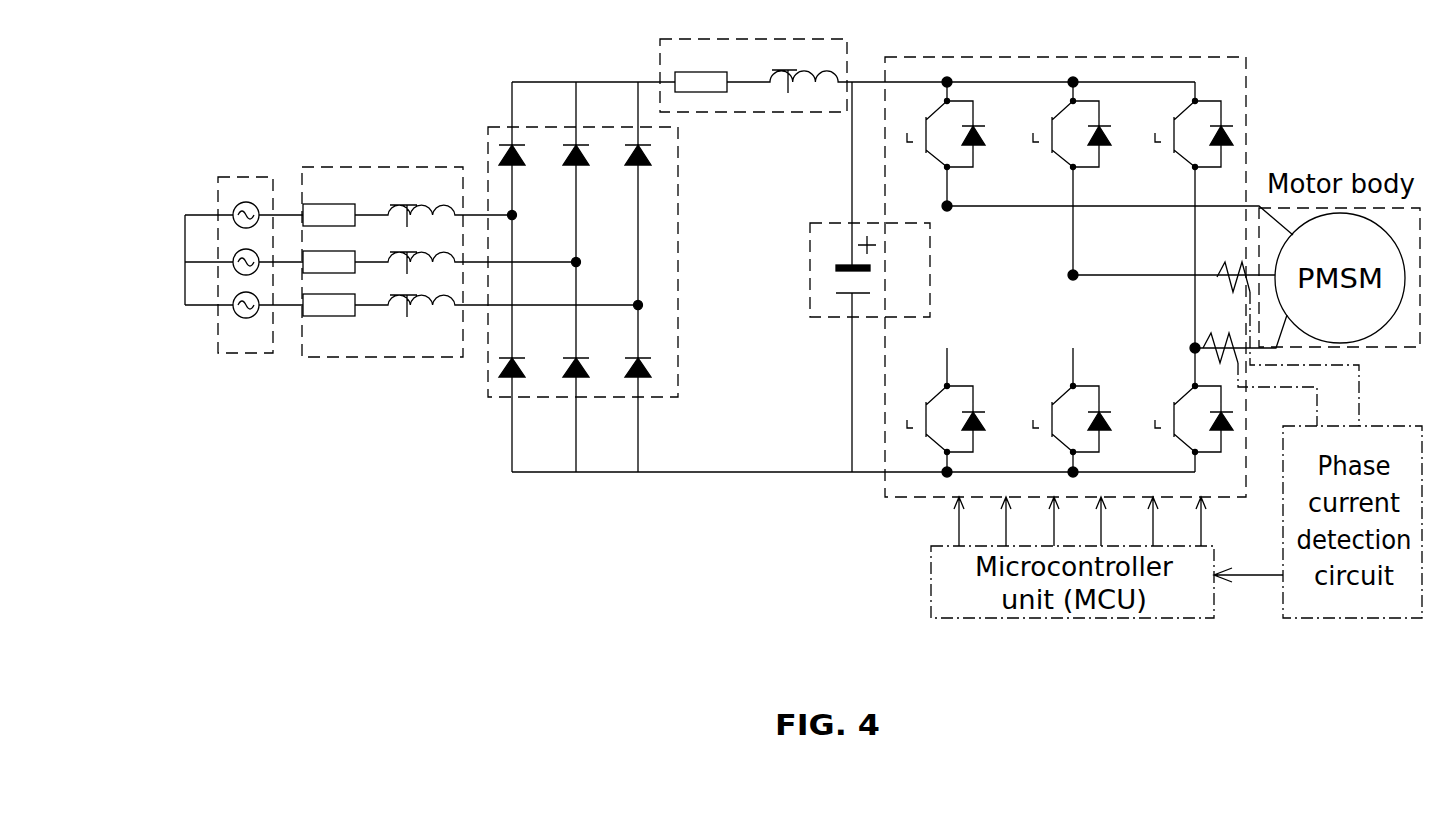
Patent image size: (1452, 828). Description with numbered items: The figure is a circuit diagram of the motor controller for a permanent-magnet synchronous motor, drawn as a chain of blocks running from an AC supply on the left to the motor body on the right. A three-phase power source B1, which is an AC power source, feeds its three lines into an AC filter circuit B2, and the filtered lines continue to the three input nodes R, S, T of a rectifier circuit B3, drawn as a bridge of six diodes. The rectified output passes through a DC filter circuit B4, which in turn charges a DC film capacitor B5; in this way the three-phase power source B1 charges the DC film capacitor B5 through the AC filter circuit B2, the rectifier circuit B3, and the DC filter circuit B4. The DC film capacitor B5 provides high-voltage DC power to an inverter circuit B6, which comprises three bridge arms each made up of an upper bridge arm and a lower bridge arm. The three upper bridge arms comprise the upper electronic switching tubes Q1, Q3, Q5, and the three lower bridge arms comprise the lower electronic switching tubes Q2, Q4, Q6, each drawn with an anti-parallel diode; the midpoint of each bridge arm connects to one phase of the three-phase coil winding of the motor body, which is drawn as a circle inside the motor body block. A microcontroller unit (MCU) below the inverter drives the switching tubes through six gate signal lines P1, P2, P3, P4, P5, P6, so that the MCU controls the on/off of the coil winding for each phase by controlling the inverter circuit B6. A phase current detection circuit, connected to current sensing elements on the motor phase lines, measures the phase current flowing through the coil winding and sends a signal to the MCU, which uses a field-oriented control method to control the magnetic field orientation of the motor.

The three-phase power source B1 is at (253, 218).
The AC filter circuit B2 is at (470, 300).
The rectifier circuit B3 is at (841, 277).
The DC filter circuit B4 is at (921, 56).
The DC film capacitor B5 is at (822, 277).
The inverter circuit B6 is at (1122, 254).
The upper electronic switching tube Q1 is at (937, 126).
The lower electronic switching tube Q2 is at (940, 428).
The upper electronic switching tube Q3 is at (1059, 126).
The lower electronic switching tube Q4 is at (1061, 428).
The upper electronic switching tube Q5 is at (1180, 126).
The lower electronic switching tube Q6 is at (1183, 428).
The MCU drive signal output port P1 is at (946, 521).
The MCU drive signal output port P2 is at (991, 521).
The MCU drive signal output port P3 is at (1039, 521).
The MCU drive signal output port P4 is at (1084, 521).
The MCU drive signal output port P5 is at (1136, 521).
The MCU drive signal output port P6 is at (1185, 521).
The rectifier input node R is at (525, 218).
The rectifier input node S is at (588, 264).
The rectifier input node T is at (653, 308).